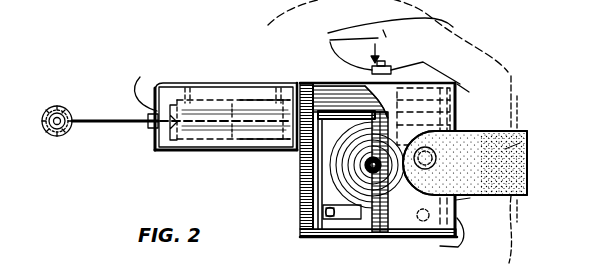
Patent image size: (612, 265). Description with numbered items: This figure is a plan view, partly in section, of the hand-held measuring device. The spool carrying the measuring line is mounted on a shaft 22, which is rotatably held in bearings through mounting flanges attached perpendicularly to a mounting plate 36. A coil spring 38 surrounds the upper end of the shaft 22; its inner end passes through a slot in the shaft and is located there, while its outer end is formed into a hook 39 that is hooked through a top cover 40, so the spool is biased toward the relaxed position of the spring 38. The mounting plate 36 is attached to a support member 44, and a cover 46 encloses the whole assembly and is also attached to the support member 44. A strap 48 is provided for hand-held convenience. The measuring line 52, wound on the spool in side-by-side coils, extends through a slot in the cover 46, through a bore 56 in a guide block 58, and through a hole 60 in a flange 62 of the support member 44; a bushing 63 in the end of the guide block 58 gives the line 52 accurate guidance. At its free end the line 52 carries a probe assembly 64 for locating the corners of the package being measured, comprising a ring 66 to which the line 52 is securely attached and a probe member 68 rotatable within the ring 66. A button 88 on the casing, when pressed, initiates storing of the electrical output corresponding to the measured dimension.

The shaft 22 is at (366, 170).
The mounting plate 36 is at (325, 100).
The coil spring 38 is at (362, 220).
The hook 39 is at (299, 165).
The top cover 40 is at (317, 218).
The support member 44 is at (220, 83).
The cover 46 is at (322, 224).
The strap 48 is at (517, 147).
The measuring line 52 is at (100, 118).
The bore 56 is at (232, 150).
The guide block 58 is at (194, 150).
The hole 60 is at (140, 84).
The flange 62 is at (149, 150).
The bushing 63 is at (144, 140).
The probe assembly 64 is at (56, 103).
The ring 66 is at (66, 132).
The probe member 68 is at (55, 132).
The button 88 is at (387, 70).